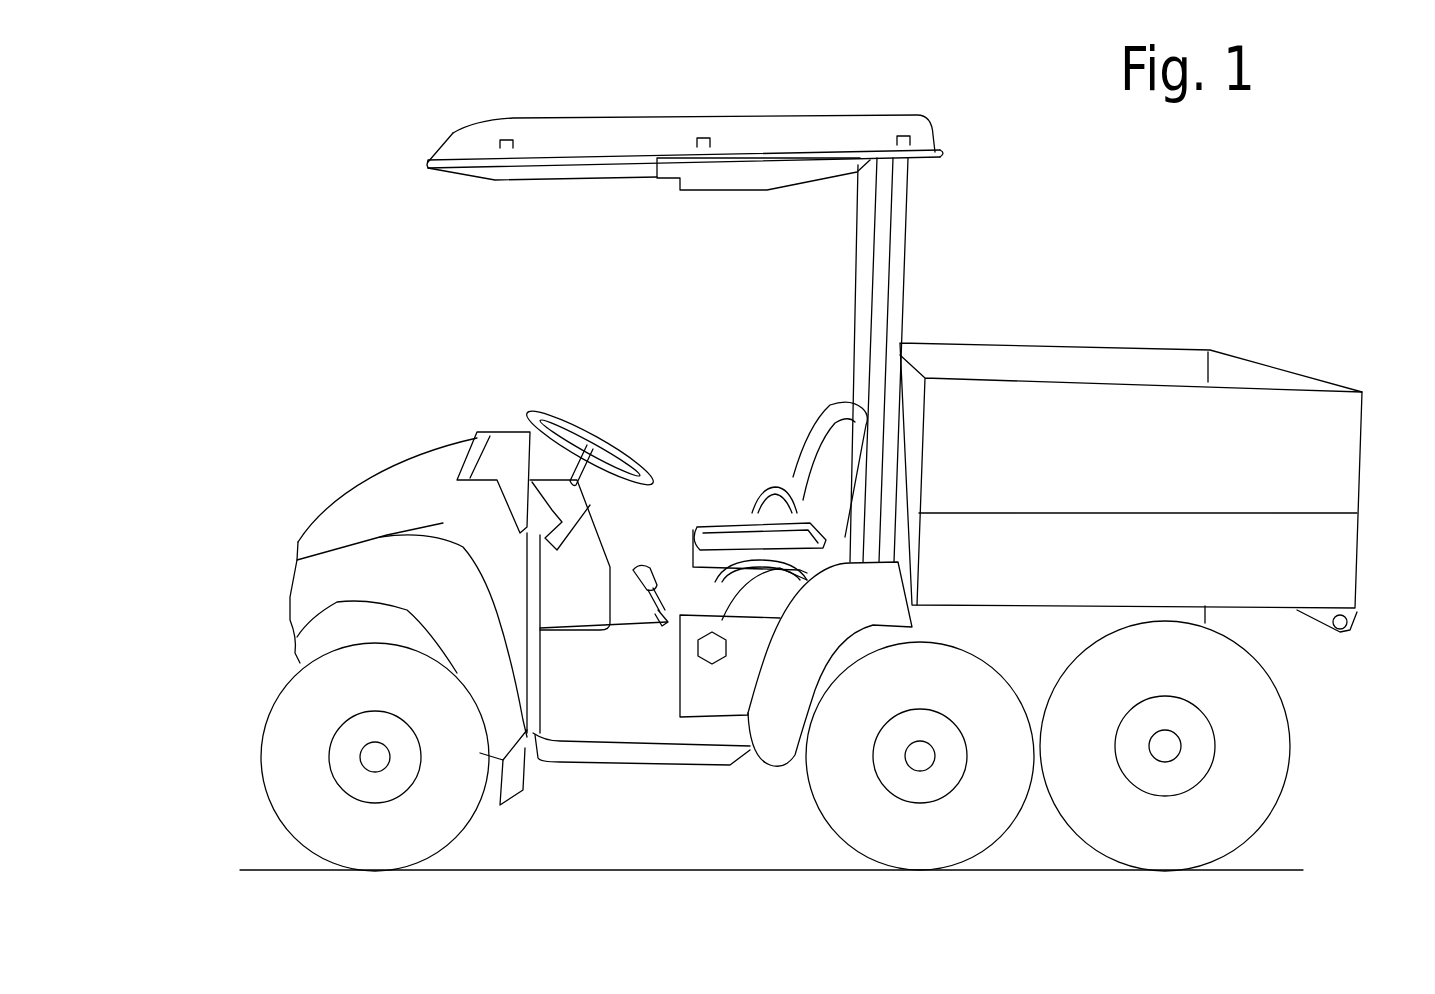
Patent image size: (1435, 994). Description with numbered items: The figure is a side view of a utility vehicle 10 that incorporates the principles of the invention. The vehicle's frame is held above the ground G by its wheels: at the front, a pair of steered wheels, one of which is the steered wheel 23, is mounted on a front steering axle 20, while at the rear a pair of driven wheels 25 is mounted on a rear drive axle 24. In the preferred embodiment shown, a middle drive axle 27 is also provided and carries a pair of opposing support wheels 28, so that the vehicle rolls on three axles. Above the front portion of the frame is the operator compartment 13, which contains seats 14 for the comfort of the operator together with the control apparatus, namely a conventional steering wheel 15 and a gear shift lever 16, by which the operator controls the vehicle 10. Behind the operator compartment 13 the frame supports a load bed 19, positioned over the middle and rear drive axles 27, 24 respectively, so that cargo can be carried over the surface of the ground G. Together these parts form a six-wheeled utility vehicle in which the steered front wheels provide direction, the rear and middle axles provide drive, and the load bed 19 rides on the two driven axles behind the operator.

The utility vehicle 10 is at (1103, 235).
The operator compartment 13 is at (558, 300).
The seats 14 is at (827, 407).
The steering wheel 15 is at (537, 400).
The gear shift lever 16 is at (638, 567).
The load bed 19 is at (1248, 358).
The front steering axle 20 is at (360, 760).
The steered wheel 23 is at (272, 712).
The rear drive axle 24 is at (1183, 743).
The driven wheels 25 is at (1268, 818).
The middle drive axle 27 is at (933, 768).
The support wheels 28 is at (840, 837).
The ground G is at (1263, 874).